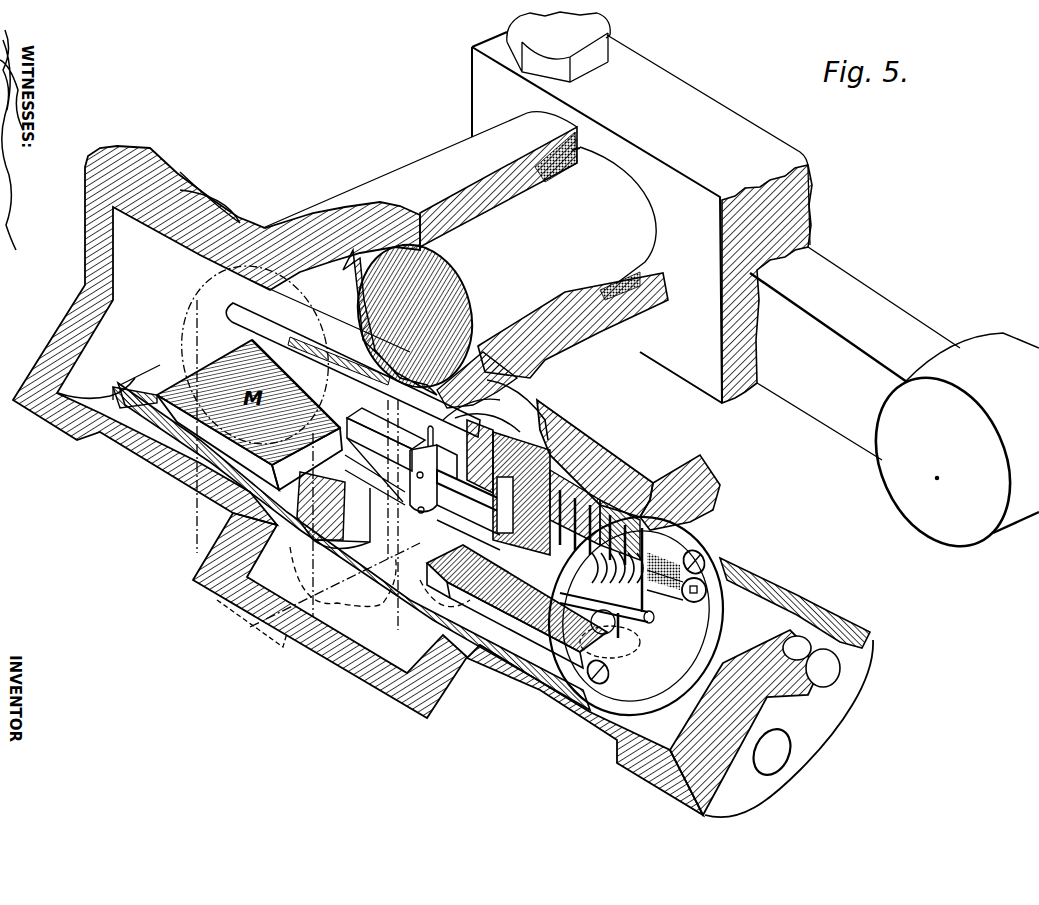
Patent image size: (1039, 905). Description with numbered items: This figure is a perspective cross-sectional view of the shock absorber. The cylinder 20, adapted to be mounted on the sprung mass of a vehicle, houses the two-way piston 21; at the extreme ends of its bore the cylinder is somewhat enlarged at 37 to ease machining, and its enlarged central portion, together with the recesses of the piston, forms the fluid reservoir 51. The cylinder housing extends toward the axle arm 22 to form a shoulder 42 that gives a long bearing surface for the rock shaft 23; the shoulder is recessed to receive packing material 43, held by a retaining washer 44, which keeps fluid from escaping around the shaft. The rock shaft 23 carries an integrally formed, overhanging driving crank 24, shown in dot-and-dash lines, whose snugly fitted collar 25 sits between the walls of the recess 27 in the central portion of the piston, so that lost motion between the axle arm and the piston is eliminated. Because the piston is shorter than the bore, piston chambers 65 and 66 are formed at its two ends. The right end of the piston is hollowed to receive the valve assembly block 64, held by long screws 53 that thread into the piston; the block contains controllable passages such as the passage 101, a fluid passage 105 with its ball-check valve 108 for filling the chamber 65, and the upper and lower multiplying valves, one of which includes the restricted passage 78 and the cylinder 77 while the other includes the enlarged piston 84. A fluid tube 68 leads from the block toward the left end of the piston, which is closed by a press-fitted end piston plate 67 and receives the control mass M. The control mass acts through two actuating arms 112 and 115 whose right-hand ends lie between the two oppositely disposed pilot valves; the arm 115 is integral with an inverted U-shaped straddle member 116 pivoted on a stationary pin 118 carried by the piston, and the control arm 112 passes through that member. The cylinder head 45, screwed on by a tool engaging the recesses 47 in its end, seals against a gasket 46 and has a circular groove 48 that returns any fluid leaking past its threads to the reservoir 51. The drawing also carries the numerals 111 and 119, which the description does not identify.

The cylinder 20 is at (263, 228).
The two-way piston 21 is at (167, 446).
The axle arm 22 is at (778, 146).
The rock shaft 23 is at (572, 236).
The driving crank 24 is at (193, 550).
The collar 25 is at (397, 600).
The recess 27 is at (362, 531).
The enlarged end of bore 37 is at (44, 425).
The shoulder 42 is at (446, 156).
The packing material 43 is at (571, 166).
The retaining washer 44 is at (580, 150).
The cylinder head 45 is at (866, 647).
The gasket 46 is at (850, 620).
The recesses 47 is at (823, 688).
The circular groove 48 is at (828, 633).
The fluid reservoir 51 is at (560, 398).
The screws 53 is at (702, 560).
The valve assembly block 64 is at (505, 668).
The piston chamber 65 is at (758, 631).
The piston chamber 66 is at (240, 300).
The end piston plate 67 is at (130, 442).
The fluid tube 68 is at (353, 358).
The cylinder 77 is at (640, 492).
The restricted fluid passage 78 is at (610, 452).
The enlarged piston 84 is at (634, 645).
The controllable fluid passage 101 is at (693, 603).
The fluid passage 105 is at (527, 569).
The ball-check valve 108 is at (632, 628).
The bracket plate 111 is at (422, 480).
The control arm 112 is at (395, 472).
The actuating arm 115 is at (355, 456).
The inverted U-shaped straddle member 116 is at (476, 414).
The stationary pin 118 is at (450, 482).
The pin 119 is at (420, 432).